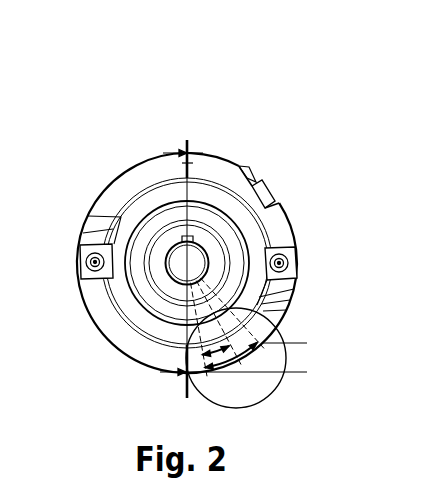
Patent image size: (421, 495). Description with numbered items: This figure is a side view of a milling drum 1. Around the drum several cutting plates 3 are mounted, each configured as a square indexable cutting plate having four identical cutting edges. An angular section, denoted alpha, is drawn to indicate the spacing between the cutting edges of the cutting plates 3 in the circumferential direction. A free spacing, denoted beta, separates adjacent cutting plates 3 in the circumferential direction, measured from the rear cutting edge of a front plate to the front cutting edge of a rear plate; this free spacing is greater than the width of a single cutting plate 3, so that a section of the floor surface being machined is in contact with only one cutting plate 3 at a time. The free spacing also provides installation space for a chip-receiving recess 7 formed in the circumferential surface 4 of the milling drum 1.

The milling drum 1 is at (84, 139).
The cutting plate 3 is at (250, 180).
The circumferential surface 4 is at (296, 228).
The chip-receiving recess 7 is at (268, 188).